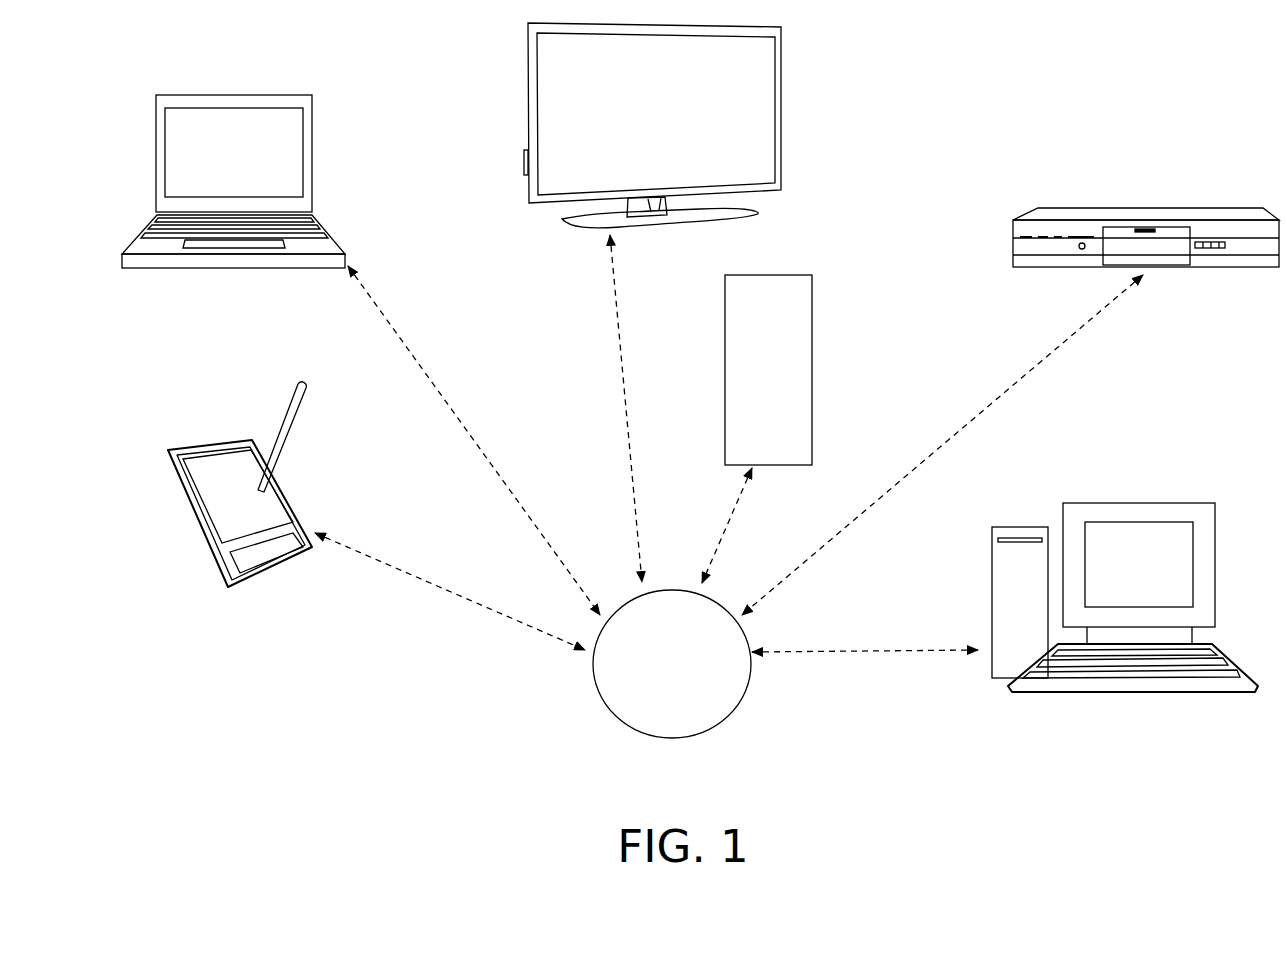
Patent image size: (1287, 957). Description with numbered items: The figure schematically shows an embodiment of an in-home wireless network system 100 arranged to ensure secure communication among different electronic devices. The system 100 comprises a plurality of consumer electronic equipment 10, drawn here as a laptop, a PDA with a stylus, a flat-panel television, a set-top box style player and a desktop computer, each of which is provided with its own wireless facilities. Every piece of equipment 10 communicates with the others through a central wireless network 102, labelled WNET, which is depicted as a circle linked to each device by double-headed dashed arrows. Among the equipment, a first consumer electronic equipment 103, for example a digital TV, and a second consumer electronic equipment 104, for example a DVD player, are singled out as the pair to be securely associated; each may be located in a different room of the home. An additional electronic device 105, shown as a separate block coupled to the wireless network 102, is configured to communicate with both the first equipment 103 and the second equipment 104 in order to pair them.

The consumer electronic equipment 10 is at (187, 271).
The wireless network system 100 is at (418, 732).
The wireless network 102 is at (672, 664).
The first consumer electronic equipment 103 is at (755, 73).
The second consumer electronic equipment 104 is at (1138, 225).
The electronic device 105 is at (797, 389).